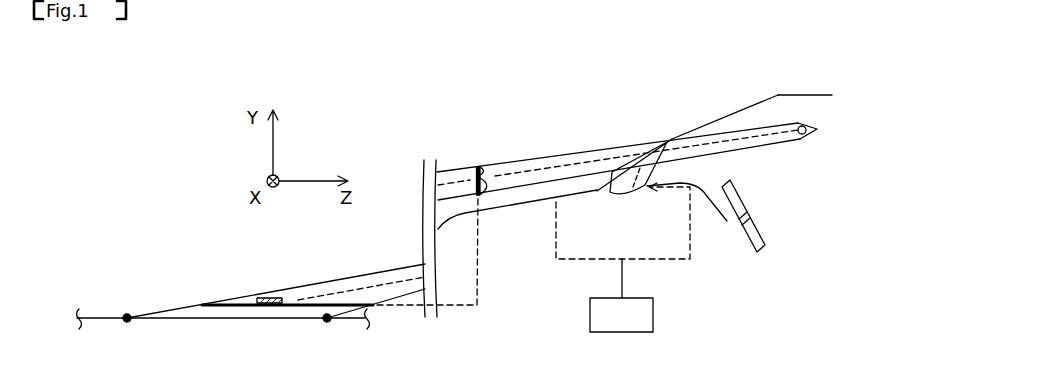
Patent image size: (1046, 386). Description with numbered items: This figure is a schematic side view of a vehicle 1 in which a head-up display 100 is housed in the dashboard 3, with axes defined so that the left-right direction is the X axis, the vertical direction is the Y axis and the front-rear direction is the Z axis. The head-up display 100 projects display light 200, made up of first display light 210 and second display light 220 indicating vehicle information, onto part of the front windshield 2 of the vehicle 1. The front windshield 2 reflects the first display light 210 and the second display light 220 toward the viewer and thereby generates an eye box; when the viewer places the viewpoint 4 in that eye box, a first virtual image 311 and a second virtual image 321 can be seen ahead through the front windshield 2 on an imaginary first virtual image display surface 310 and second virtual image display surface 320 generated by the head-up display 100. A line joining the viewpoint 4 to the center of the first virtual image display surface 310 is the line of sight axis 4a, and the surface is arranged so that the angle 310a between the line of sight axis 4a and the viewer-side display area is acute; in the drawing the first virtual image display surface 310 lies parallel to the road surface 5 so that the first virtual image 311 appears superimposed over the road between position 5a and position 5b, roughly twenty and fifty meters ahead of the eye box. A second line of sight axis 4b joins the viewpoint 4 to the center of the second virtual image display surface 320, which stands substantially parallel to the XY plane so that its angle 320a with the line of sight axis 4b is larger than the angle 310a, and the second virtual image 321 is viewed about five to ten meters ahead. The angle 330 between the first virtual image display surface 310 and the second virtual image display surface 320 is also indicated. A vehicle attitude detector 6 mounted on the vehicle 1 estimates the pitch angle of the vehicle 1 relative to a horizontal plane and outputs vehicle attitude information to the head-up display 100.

The vehicle 1 is at (800, 85).
The front windshield 2 is at (728, 115).
The dashboard 3 is at (690, 182).
The viewpoint 4 is at (803, 135).
The line of sight axis 4a is at (383, 281).
The line of sight axis 4b is at (503, 153).
The road surface 5 is at (92, 316).
The position 5a is at (328, 321).
The position 5b is at (129, 321).
The vehicle attitude detector 6 is at (653, 316).
The head-up display 100 is at (552, 260).
The display light 200 is at (565, 144).
The first display light 210 is at (619, 169).
The second display light 220 is at (517, 209).
The first virtual image display surface 310 is at (203, 303).
The angle 310a is at (331, 298).
The first virtual image 311 is at (268, 298).
The second virtual image display surface 320 is at (477, 185).
The angle 320a is at (486, 190).
The second virtual image 321 is at (478, 168).
The angle 330 is at (472, 285).